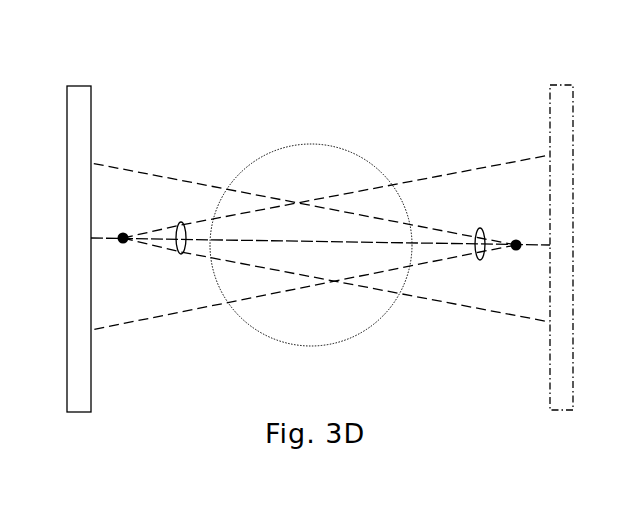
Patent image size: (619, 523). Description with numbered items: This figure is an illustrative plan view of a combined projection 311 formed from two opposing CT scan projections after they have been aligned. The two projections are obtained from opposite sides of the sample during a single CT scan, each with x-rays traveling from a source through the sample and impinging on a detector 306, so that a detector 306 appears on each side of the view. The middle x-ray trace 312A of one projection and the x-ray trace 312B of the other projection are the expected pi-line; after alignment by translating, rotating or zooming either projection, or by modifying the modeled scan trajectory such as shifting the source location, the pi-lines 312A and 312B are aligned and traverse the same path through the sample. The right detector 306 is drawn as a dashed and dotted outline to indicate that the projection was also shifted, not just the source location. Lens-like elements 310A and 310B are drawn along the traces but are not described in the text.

The detector 306 is at (78, 412).
The combined projection 311 is at (303, 68).
The x-ray trace 312A is at (101, 224).
The x-ray trace 312B is at (532, 226).
The first lens 310A is at (478, 262).
The second lens 310B is at (181, 256).